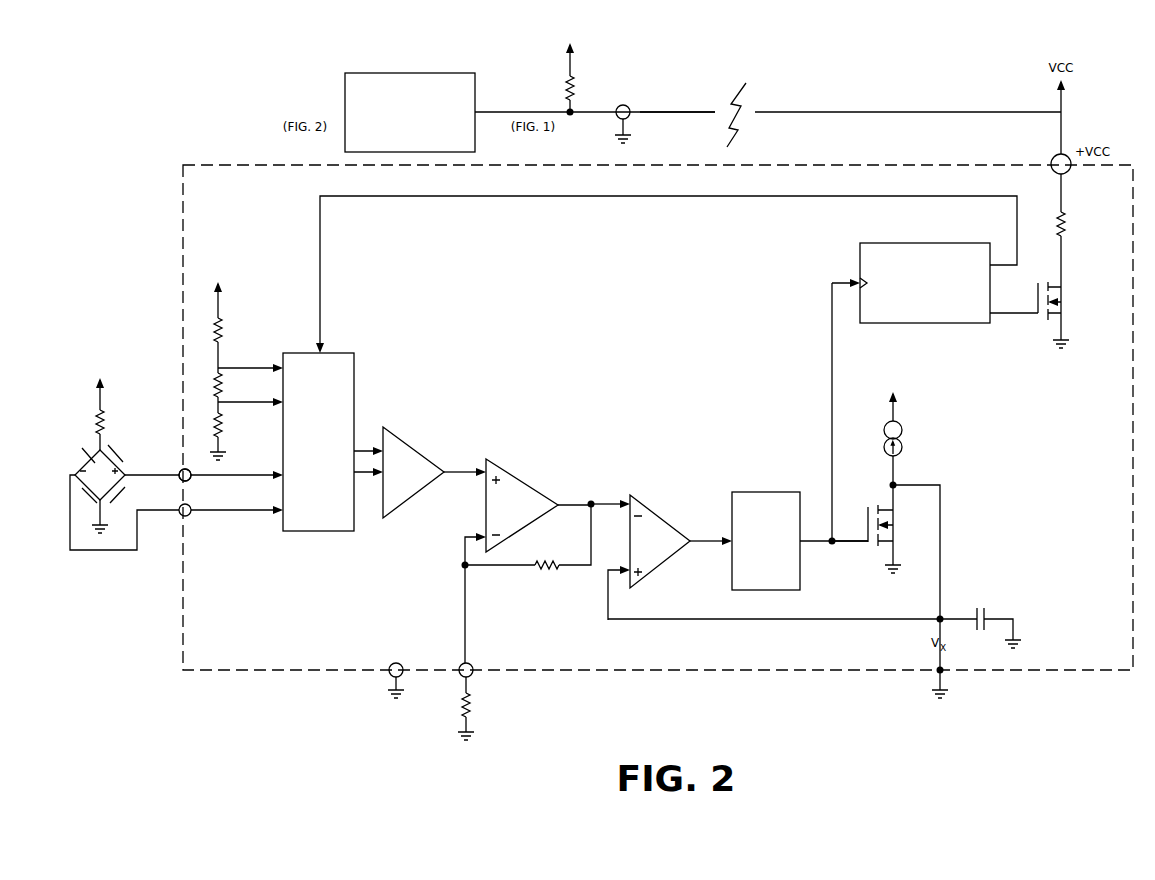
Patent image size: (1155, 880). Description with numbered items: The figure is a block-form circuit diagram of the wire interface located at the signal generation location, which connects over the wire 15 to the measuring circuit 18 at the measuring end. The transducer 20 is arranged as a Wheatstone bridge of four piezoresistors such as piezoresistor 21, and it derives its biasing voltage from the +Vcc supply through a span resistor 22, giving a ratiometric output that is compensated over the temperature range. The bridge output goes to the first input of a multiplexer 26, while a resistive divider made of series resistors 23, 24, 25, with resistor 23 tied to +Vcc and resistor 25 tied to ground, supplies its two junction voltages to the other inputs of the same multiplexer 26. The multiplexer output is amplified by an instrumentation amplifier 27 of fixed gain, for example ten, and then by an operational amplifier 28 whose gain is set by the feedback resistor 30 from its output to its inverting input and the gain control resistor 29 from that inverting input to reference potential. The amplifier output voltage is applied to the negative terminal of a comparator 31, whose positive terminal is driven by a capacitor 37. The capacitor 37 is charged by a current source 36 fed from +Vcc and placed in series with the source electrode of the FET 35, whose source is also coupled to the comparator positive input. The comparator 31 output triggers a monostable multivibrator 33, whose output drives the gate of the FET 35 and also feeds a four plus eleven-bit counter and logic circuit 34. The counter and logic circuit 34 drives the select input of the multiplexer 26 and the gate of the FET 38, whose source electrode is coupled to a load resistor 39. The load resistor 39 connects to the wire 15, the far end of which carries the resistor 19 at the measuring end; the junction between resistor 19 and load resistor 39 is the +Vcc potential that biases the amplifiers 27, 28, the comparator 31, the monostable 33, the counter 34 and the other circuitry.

The wire 15 is at (668, 114).
The measuring circuit 18 is at (345, 108).
The resistor 19 is at (566, 80).
The transducer 20 is at (112, 510).
The piezoresistor 21 is at (123, 473).
The span resistor 22 is at (107, 405).
The resistor 23 is at (228, 329).
The resistor 24 is at (225, 380).
The resistor 25 is at (230, 427).
The multiplexer 26 is at (298, 531).
The instrumentation amplifier 27 is at (408, 493).
The operational amplifier 28 is at (516, 482).
The gain control resistor 29 is at (473, 694).
The feedback resistor 30 is at (574, 568).
The comparator 31 is at (667, 555).
The monostable multivibrator 33 is at (765, 492).
The counter and logic circuit 34 is at (965, 323).
The FET 35 is at (898, 525).
The current source 36 is at (902, 422).
The capacitor 37 is at (981, 632).
The FET 38 is at (1066, 310).
The load resistor 39 is at (1064, 232).